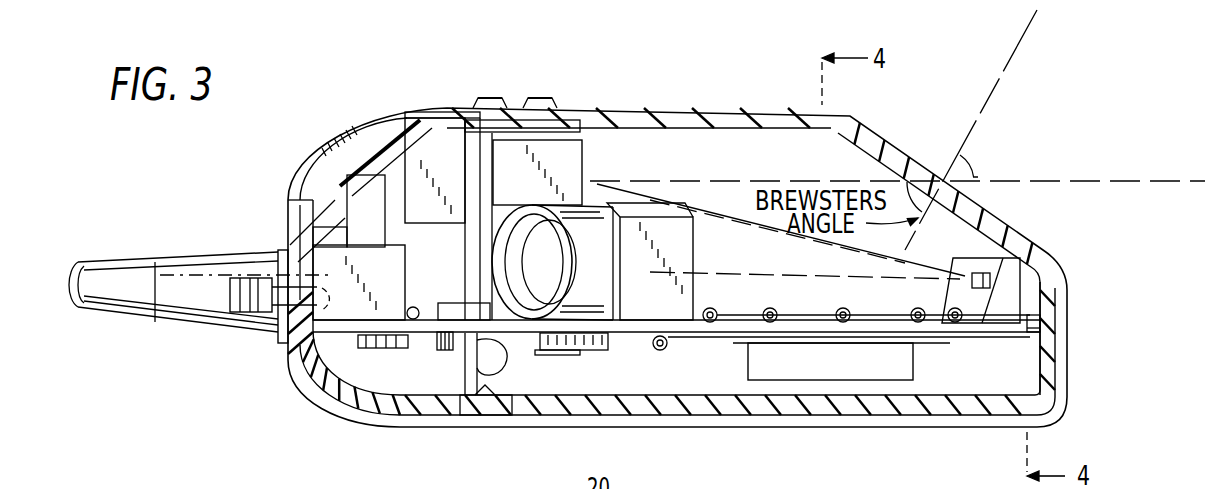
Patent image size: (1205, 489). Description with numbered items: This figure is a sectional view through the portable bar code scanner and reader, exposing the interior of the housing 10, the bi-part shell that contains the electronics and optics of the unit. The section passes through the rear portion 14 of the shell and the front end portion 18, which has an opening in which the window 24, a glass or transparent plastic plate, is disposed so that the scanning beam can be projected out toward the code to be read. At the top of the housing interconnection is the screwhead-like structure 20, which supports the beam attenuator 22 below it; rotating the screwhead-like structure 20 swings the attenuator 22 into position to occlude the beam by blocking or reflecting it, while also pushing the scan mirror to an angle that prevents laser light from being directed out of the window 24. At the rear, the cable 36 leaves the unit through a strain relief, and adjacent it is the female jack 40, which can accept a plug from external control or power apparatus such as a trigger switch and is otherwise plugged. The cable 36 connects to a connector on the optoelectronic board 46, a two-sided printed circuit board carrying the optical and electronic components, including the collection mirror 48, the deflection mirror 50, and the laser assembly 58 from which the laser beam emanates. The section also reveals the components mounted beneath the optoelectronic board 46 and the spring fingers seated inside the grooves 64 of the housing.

The housing 10 is at (845, 428).
The rear portion 14 is at (342, 417).
The front end portion 18 is at (852, 113).
The screwhead-like structure 20 is at (512, 88).
The beam attenuator 22 is at (533, 147).
The window 24 is at (917, 158).
The cable 36 is at (223, 255).
The female jack 40 is at (287, 297).
The optoelectronic board 46 is at (305, 358).
The collection mirror 48 is at (1010, 282).
The deflection mirror 50 is at (980, 272).
The laser assembly 58 is at (657, 297).
The grooves 64 is at (1035, 330).